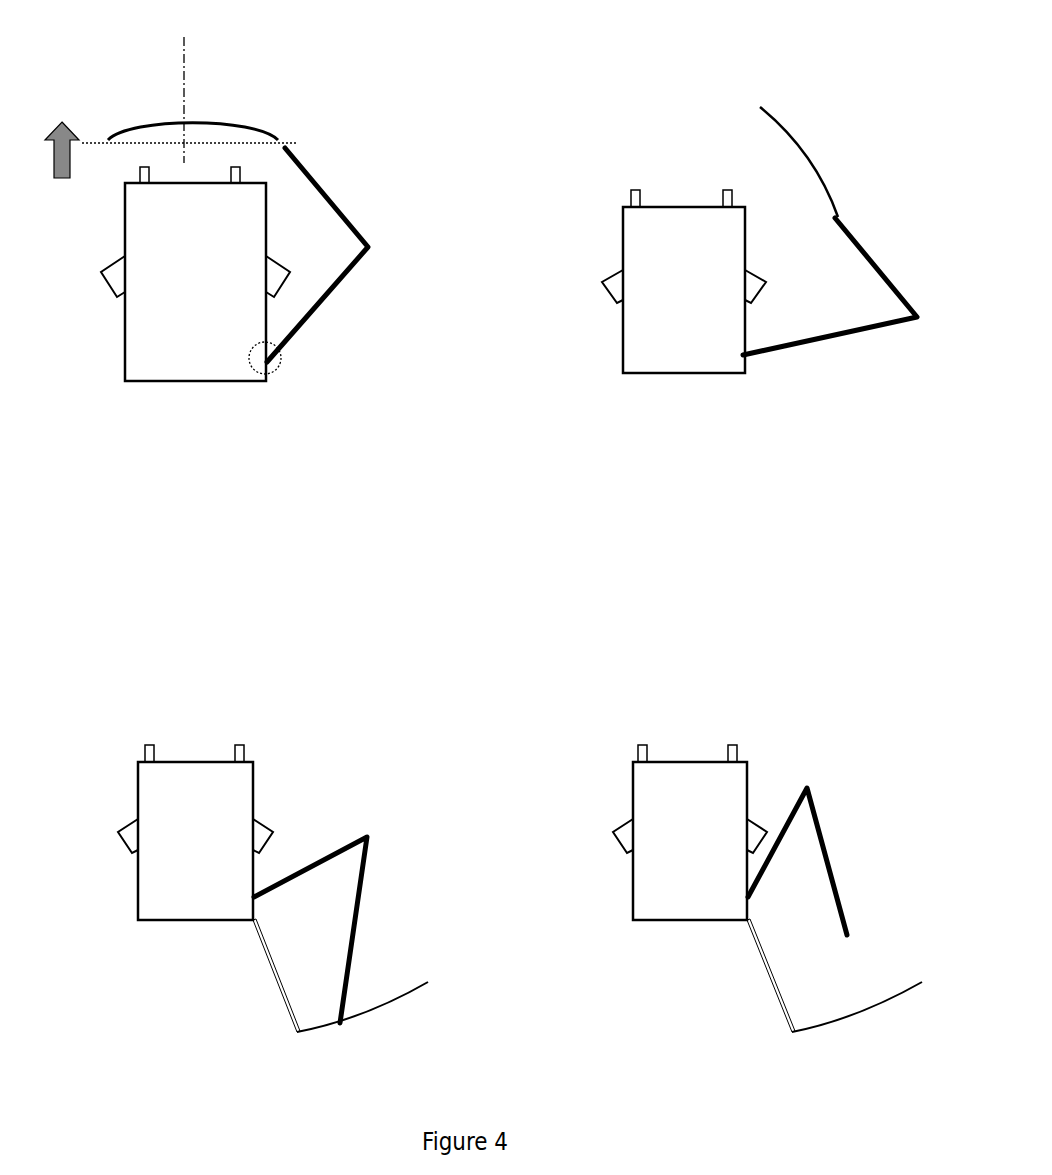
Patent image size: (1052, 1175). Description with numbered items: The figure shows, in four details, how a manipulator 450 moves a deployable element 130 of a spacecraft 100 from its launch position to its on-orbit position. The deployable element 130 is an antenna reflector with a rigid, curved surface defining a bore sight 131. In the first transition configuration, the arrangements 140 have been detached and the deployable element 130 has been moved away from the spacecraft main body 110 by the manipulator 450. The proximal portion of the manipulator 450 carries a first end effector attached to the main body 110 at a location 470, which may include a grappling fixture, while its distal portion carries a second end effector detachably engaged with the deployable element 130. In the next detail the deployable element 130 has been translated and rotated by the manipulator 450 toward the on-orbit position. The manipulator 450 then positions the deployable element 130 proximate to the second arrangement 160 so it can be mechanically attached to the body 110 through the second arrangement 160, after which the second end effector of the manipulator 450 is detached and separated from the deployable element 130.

The spacecraft 100 is at (125, 66).
The main body structure 110 is at (120, 320).
The deployable element 130 is at (207, 123).
The bore sight 131 is at (186, 68).
The arrangements 140 is at (133, 162).
The second arrangement 160 is at (263, 955).
The manipulator 450 is at (343, 213).
The location 470 is at (272, 362).